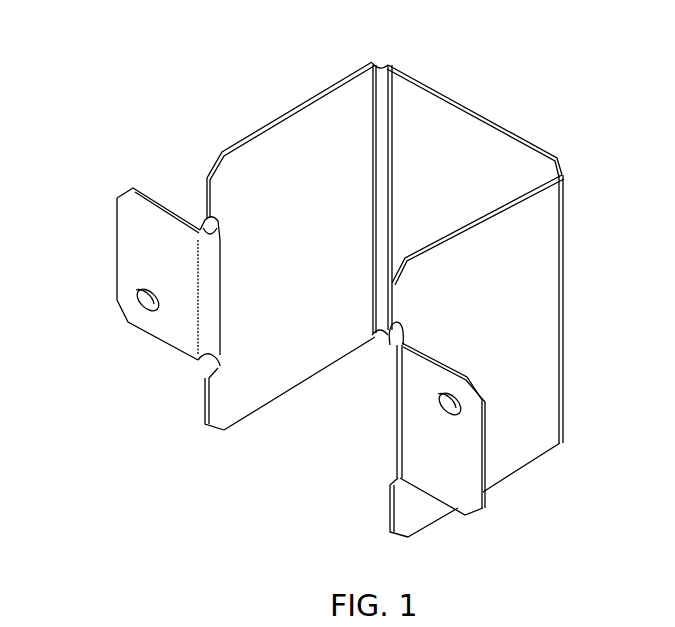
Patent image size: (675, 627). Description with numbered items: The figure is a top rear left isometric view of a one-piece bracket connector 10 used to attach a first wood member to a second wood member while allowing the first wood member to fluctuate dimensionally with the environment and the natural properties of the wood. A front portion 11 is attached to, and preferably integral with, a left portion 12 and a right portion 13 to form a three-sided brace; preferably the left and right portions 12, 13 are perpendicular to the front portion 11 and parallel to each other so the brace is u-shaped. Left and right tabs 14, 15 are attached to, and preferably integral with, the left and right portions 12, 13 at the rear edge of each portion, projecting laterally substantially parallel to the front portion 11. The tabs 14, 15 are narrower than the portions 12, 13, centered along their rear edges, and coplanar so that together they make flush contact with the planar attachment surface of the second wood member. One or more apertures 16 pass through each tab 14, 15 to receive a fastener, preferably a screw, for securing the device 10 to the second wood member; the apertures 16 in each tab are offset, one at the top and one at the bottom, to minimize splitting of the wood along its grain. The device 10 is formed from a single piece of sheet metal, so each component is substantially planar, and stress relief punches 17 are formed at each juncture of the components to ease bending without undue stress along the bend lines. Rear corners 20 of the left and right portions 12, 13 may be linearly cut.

The bracket connector 10 is at (123, 102).
The front portion 11 is at (478, 110).
The left portion 12 is at (545, 335).
The right portion 13 is at (278, 115).
The left tab 14 is at (478, 512).
The right tab 15 is at (128, 263).
The aperture 16 is at (145, 310).
The stress relief punch 17 is at (200, 217).
The rear corner 20 is at (211, 428).